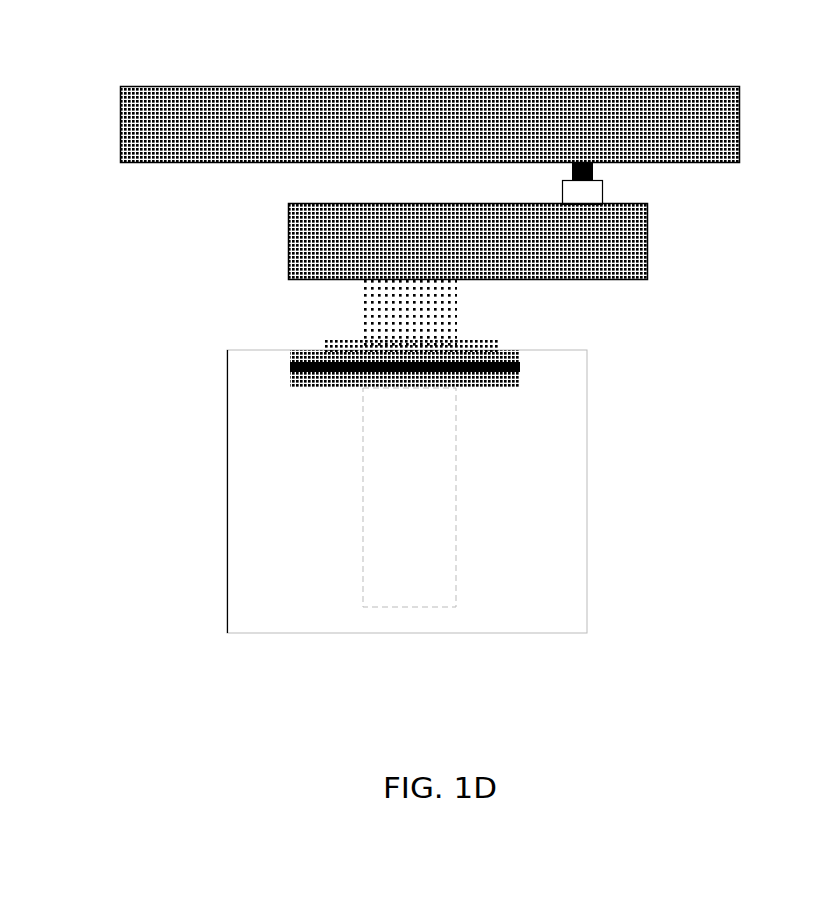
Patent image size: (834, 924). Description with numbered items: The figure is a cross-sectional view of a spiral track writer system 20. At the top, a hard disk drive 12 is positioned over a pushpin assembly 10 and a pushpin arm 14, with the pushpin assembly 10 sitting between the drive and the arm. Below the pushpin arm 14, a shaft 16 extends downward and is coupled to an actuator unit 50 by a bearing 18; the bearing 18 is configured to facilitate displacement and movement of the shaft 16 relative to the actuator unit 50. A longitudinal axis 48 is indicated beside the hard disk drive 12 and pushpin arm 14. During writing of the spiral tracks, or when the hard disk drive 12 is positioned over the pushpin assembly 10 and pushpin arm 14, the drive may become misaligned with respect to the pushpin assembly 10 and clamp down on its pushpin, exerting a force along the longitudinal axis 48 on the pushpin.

The spiral track writer system 20 is at (64, 28).
The hard disk drive 12 is at (164, 126).
The pushpin assembly 10 is at (563, 182).
The pushpin arm 14 is at (600, 257).
The shaft 16 is at (432, 313).
The bearing 18 is at (510, 357).
The actuator unit 50 is at (554, 519).
The longitudinal axis 48 is at (803, 72).